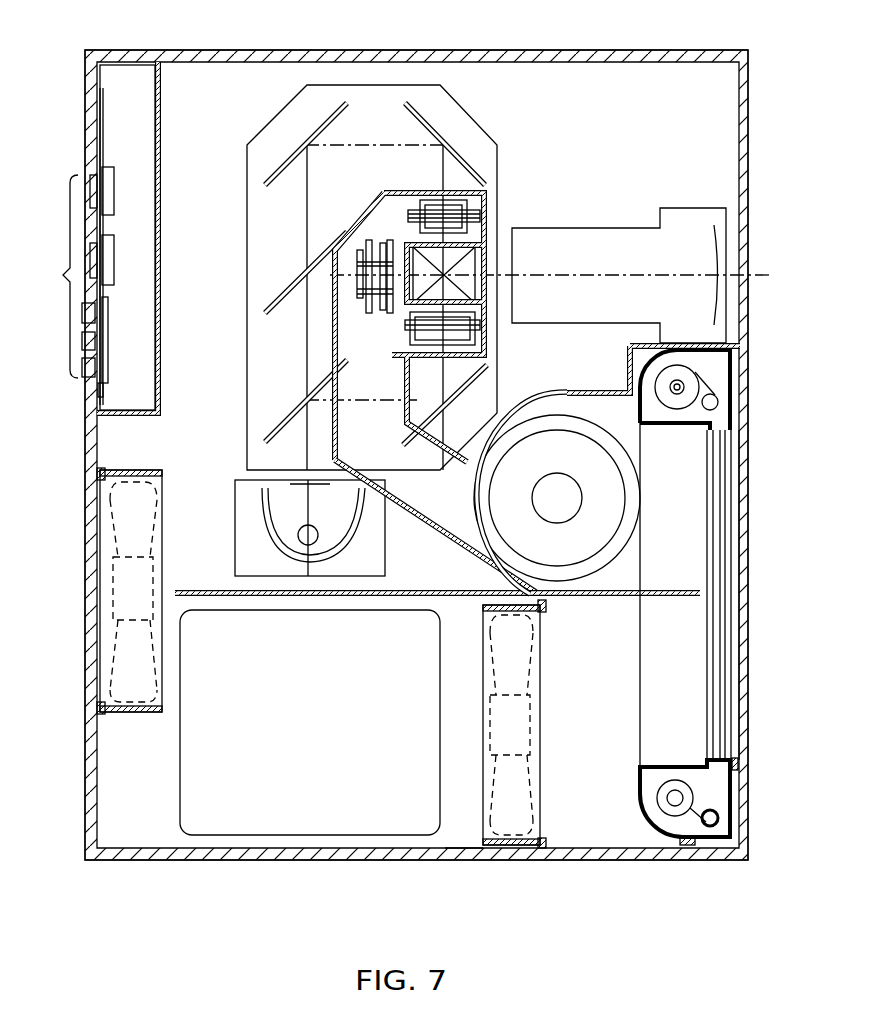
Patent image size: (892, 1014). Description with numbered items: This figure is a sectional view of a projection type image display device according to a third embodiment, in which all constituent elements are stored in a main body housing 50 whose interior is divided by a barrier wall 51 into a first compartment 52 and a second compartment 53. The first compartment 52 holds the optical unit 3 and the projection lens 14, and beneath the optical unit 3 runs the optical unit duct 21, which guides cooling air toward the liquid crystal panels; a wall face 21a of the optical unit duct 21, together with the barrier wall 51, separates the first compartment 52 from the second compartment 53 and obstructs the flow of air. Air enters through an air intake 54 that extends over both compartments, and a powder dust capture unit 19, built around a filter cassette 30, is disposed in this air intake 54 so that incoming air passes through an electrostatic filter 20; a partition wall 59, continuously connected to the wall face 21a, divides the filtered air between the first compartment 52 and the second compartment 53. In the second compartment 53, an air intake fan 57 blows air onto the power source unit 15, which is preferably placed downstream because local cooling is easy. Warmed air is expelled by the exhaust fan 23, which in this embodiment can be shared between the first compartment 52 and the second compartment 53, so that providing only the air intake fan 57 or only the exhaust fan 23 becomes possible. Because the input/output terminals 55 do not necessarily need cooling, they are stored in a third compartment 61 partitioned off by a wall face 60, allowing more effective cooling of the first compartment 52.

The optical unit 3 is at (247, 163).
The projection lens 14 is at (685, 213).
The power source unit 15 is at (205, 778).
The powder dust capture unit 19 is at (633, 732).
The electrostatic filter 20 is at (722, 686).
The optical unit duct 21 is at (332, 455).
The wall face 21a is at (567, 598).
The exhaust fan 23 is at (122, 524).
The filter cassette 30 is at (648, 772).
The main body housing 50 is at (572, 53).
The barrier wall 51 is at (180, 596).
The first compartment 52 is at (712, 103).
The second compartment 53 is at (467, 806).
The air intake 54 is at (748, 505).
The input/output terminals 55 is at (73, 282).
The air intake fan 57 is at (508, 822).
The partition wall 59 is at (700, 590).
The wall face 60 is at (158, 105).
The third compartment 61 is at (137, 88).